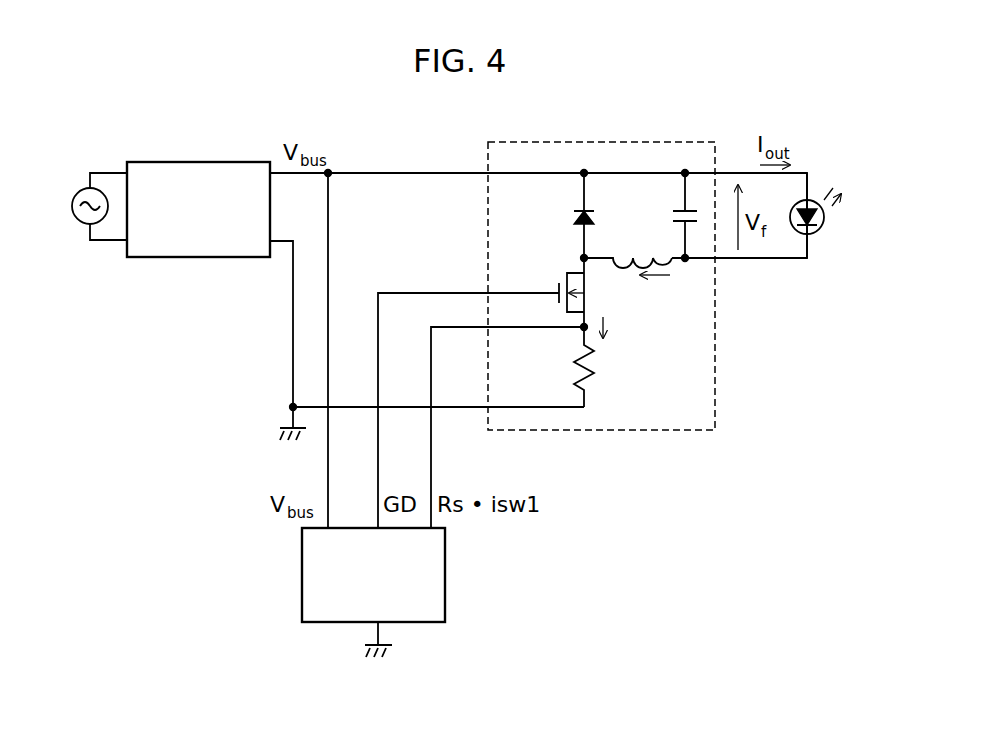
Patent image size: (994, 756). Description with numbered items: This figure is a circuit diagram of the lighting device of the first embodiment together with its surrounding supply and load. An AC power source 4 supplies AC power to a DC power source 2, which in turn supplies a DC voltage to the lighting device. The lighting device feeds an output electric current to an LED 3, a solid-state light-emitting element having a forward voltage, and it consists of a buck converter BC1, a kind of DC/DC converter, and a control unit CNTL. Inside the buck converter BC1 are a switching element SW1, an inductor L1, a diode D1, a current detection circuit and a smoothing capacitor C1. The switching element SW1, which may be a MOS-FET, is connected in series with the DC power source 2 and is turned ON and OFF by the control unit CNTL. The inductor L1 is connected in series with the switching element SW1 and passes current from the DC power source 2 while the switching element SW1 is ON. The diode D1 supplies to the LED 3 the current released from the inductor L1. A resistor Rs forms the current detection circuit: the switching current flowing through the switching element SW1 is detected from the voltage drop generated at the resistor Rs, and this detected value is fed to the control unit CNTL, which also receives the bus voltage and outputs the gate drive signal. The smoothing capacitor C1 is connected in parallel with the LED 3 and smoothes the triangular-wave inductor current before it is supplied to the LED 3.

The DC power source 2 is at (205, 162).
The LED 3 is at (822, 228).
The AC power source 4 is at (76, 191).
The buck converter BC1 is at (600, 142).
The control unit CNTL is at (448, 598).
The diode D1 is at (565, 215).
The smoothing capacitor C1 is at (668, 215).
The inductor L1 is at (628, 266).
The switching element SW1 is at (543, 292).
The resistor Rs is at (601, 367).